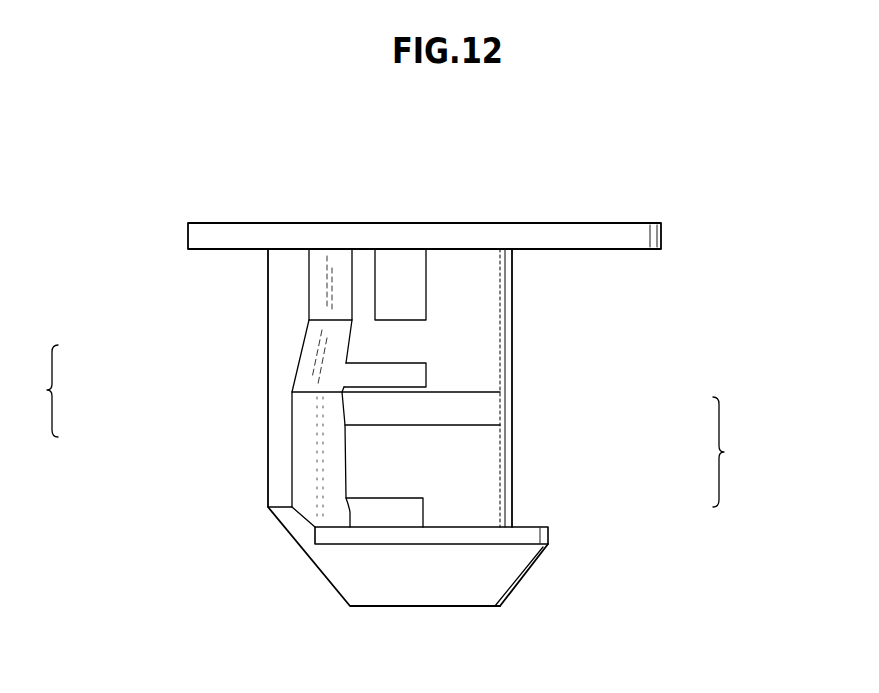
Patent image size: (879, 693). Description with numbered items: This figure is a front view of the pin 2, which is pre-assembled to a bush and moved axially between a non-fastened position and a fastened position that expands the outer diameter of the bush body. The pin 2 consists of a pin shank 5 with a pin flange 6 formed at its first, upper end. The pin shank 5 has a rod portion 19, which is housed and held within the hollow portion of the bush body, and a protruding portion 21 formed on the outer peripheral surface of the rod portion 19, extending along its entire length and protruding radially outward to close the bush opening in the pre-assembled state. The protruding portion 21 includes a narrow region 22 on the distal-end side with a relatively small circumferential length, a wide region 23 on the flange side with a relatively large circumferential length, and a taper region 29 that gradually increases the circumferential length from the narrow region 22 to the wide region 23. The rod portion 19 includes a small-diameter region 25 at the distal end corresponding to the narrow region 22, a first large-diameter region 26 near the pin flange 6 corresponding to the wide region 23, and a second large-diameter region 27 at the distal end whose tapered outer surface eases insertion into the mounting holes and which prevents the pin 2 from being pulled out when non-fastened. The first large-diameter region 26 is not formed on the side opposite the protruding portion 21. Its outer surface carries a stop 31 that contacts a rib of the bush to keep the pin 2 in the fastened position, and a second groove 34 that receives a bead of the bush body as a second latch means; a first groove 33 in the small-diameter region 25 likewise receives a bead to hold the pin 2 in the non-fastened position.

The pin 2 is at (673, 204).
The pin shank 5 is at (512, 382).
The pin flange 6 is at (189, 236).
The rod portion 19 is at (738, 452).
The protruding portion 21 is at (38, 391).
The narrow region 22 is at (278, 470).
The wide region 23 is at (295, 280).
The small-diameter region 25 is at (513, 445).
The first large-diameter region 26 is at (504, 262).
The second large-diameter region 27 is at (550, 538).
The taper region 29 is at (305, 373).
The stop 31 is at (388, 288).
The first groove 33 is at (407, 517).
The second groove 34 is at (407, 372).